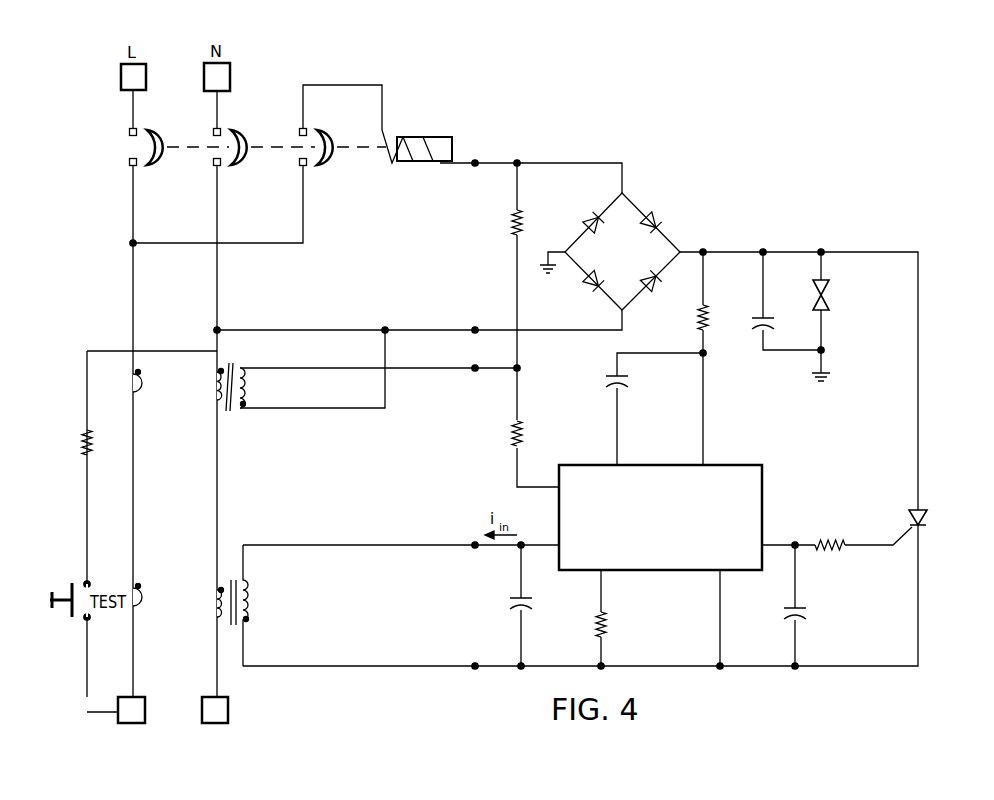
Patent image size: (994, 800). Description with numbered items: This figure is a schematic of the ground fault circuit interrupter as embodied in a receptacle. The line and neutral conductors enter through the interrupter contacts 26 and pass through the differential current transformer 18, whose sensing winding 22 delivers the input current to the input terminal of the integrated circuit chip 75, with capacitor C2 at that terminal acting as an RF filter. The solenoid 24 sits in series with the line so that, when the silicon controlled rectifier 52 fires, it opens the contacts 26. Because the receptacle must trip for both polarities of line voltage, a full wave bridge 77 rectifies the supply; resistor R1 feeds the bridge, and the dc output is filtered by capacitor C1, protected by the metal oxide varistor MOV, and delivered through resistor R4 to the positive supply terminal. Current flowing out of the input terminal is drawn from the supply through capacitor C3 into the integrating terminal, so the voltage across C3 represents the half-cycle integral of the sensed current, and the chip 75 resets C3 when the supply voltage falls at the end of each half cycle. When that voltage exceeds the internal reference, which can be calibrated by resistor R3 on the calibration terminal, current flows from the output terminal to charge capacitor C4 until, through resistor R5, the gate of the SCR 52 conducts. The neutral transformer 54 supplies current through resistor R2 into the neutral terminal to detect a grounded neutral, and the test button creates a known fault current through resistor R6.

The interrupter contacts 26 is at (265, 116).
The solenoid 24 is at (422, 164).
The full wave bridge 77 is at (700, 209).
The neutral transformer 54 is at (268, 452).
The integrated circuit chip 75 is at (673, 530).
The differential current transformer 18 is at (240, 565).
The sensing winding 22 is at (234, 648).
The silicon controlled rectifier 52 is at (911, 509).
The resistor R1 is at (511, 222).
The resistor R2 is at (511, 430).
The resistor R3 is at (606, 617).
The resistor R4 is at (699, 316).
The resistor R5 is at (838, 550).
The test resistor R6 is at (90, 456).
The capacitor C1 is at (757, 316).
The capacitor C2 is at (509, 606).
The capacitor C3 is at (610, 380).
The capacitor C4 is at (809, 620).
The metal oxide varistor MOV is at (830, 295).